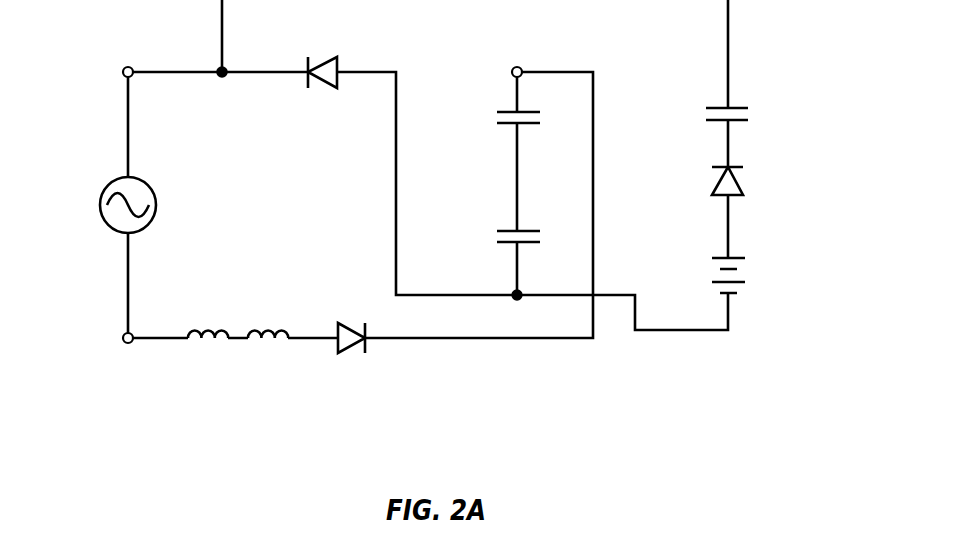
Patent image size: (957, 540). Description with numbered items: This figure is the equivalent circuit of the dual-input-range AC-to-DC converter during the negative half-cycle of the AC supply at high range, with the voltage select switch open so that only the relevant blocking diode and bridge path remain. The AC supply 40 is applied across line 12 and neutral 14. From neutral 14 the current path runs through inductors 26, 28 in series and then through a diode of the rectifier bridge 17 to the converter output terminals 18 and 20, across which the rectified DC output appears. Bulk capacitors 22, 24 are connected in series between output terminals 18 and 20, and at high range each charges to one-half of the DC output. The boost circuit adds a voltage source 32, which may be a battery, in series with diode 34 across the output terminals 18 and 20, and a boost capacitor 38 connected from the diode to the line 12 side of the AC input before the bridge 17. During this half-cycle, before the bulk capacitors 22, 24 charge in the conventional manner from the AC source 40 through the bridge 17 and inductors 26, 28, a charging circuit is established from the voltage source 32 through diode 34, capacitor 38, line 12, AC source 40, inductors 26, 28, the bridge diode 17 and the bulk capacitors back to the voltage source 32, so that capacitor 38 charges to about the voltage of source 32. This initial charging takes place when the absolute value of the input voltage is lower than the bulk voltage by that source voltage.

The line 12 is at (124, 67).
The neutral 14 is at (124, 343).
The rectifier bridge 17 is at (325, 62).
The converter output terminal 18 is at (513, 67).
The converter output terminal 20 is at (519, 298).
The bulk capacitor 22 is at (497, 118).
The bulk capacitor 24 is at (497, 235).
The inductor 26 is at (213, 340).
The inductor 28 is at (268, 323).
The voltage source 32 is at (743, 268).
The diode 34 is at (738, 177).
The boost capacitor 38 is at (733, 108).
The AC supply 40 is at (114, 180).